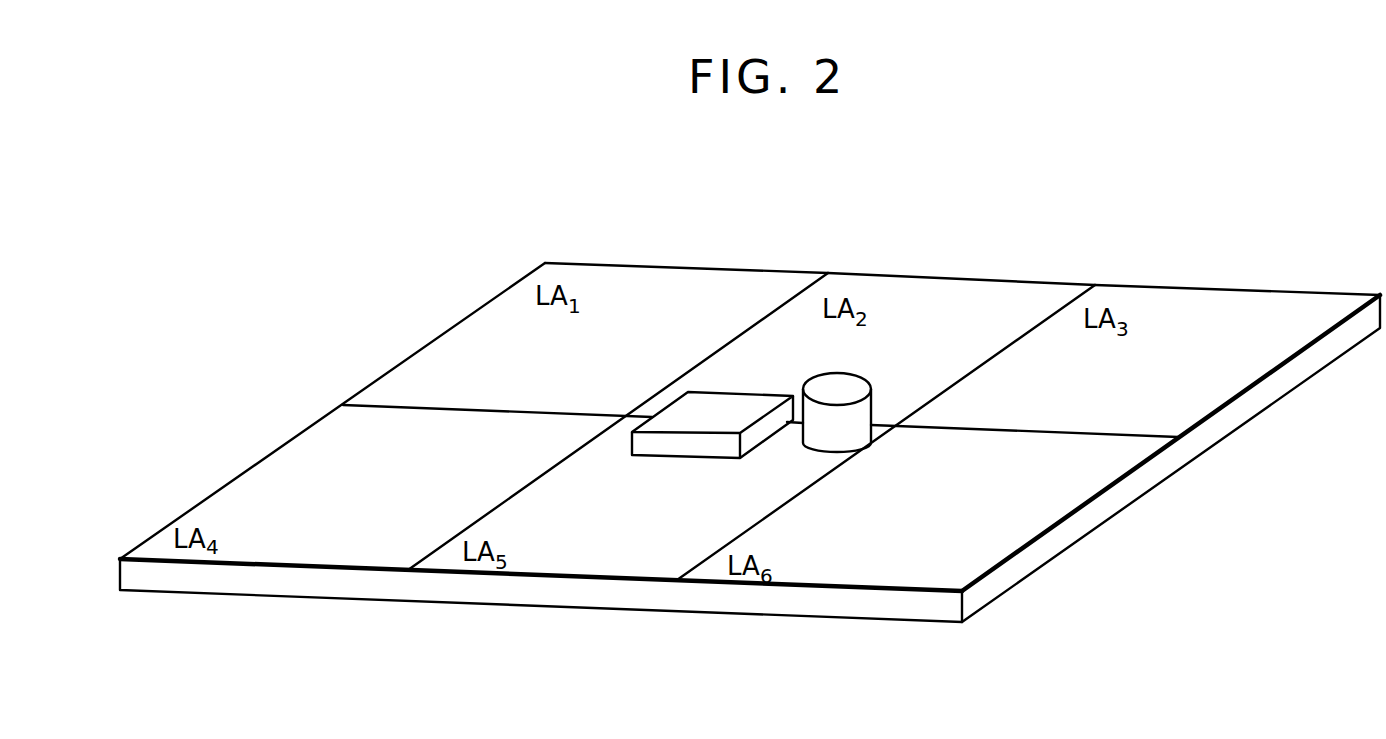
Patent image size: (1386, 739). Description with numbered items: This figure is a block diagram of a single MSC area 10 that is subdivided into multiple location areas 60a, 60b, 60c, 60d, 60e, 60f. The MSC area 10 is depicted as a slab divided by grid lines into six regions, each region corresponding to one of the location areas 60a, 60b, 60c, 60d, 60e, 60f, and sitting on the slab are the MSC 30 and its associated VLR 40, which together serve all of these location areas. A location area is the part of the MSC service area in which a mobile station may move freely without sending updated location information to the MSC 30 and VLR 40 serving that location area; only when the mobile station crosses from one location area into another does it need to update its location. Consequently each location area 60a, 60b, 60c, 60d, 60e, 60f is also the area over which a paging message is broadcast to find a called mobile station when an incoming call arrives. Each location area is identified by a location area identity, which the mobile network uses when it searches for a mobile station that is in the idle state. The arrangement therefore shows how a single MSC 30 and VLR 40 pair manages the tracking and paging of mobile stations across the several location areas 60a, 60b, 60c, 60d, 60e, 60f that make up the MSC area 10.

The MSC area 10 is at (750, 432).
The MSC 30 is at (666, 448).
The VLR 40 is at (825, 447).
The location area 60a is at (677, 285).
The location area 60b is at (947, 293).
The location area 60c is at (1237, 305).
The location area 60d is at (1088, 486).
The location area 60e is at (591, 560).
The location area 60f is at (300, 440).